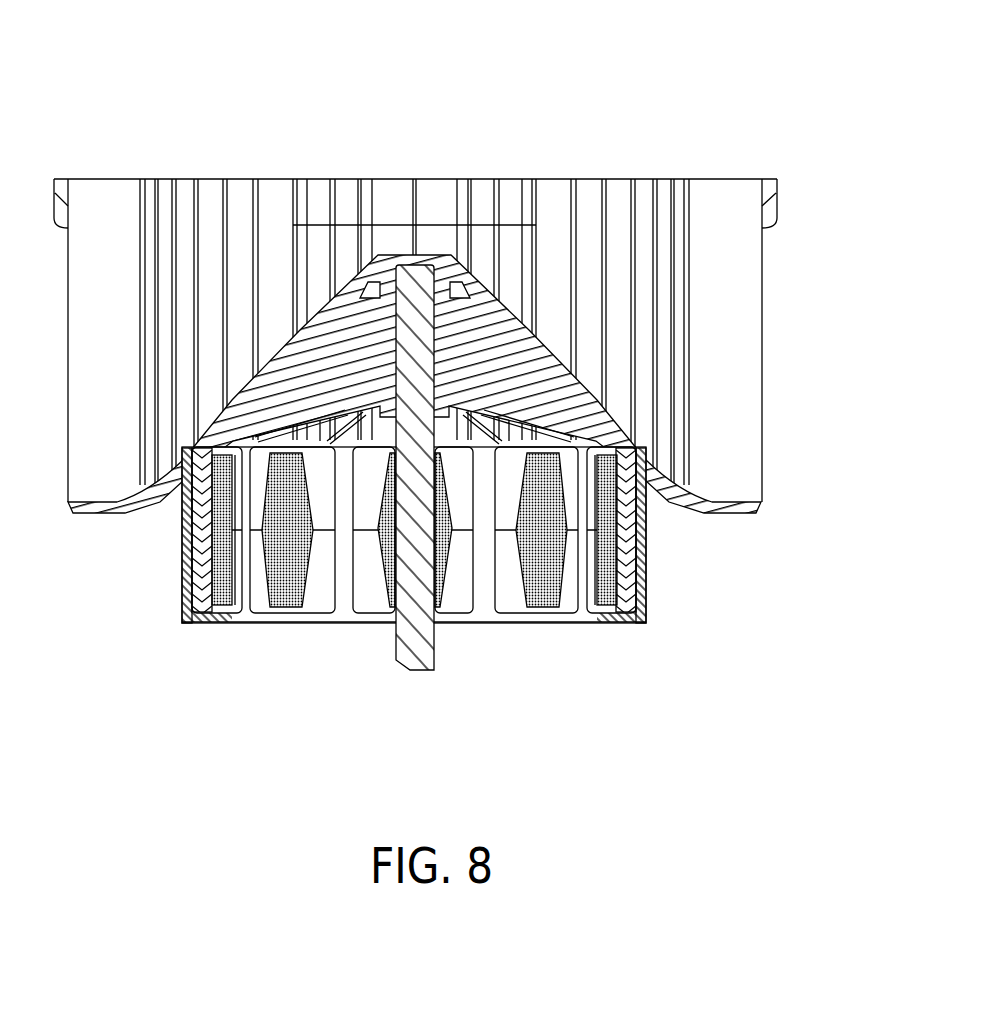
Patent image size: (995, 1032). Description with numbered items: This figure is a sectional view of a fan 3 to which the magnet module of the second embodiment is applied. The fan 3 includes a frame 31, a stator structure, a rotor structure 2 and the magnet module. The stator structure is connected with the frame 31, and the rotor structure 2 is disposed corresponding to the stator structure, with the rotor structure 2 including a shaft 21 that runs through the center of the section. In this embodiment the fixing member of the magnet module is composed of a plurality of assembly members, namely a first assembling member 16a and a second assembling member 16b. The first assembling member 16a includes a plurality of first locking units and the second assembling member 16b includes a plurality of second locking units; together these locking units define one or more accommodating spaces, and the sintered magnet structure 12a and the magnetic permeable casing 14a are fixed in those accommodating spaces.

The fan 3 is at (128, 46).
The frame 31 is at (717, 205).
The rotor structure 2 is at (182, 582).
The shaft 21 is at (393, 642).
The sintered magnet structure 12a is at (605, 602).
The magnetic permeable casing 14a is at (623, 552).
The first assembling member 16a is at (468, 518).
The second assembling member 16b is at (455, 593).